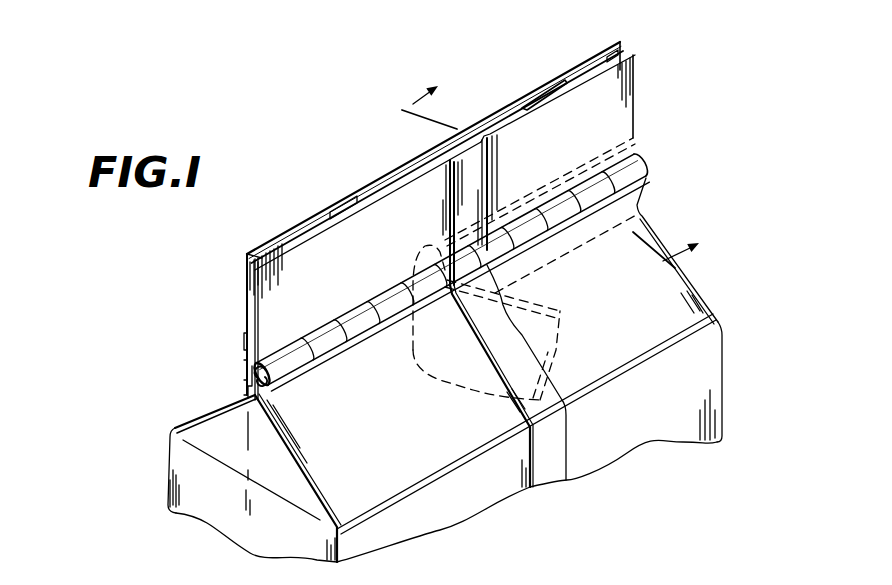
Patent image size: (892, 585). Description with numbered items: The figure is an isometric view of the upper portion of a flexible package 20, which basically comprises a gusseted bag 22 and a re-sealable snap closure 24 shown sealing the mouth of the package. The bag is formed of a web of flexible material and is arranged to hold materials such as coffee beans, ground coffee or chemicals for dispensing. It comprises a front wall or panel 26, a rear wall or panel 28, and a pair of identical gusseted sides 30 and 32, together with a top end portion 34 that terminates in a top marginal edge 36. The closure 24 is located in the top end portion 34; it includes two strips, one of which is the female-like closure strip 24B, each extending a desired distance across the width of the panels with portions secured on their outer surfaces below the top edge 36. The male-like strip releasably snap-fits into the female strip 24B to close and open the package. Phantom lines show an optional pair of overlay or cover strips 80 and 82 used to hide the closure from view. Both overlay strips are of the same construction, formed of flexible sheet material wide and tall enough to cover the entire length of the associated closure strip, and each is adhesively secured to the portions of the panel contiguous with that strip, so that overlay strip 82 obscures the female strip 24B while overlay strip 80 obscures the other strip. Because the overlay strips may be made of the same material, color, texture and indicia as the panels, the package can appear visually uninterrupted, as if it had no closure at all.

The flexible package 20 is at (210, 335).
The gusseted bag 22 is at (238, 292).
The re-sealable closure 24 is at (664, 152).
The female closure strip 24B is at (650, 165).
The front wall or panel 26 is at (167, 456).
The rear wall or panel 28 is at (698, 397).
The gusseted side 30 is at (263, 247).
The gusseted side 32 is at (622, 44).
The top end portion 34 is at (303, 266).
The top marginal edge 36 is at (352, 203).
The overlay strip 80 is at (236, 368).
The overlay strip 82 is at (518, 351).